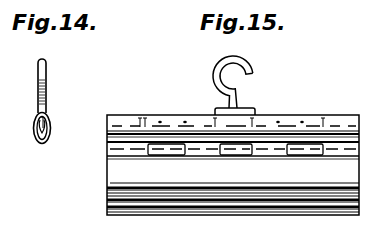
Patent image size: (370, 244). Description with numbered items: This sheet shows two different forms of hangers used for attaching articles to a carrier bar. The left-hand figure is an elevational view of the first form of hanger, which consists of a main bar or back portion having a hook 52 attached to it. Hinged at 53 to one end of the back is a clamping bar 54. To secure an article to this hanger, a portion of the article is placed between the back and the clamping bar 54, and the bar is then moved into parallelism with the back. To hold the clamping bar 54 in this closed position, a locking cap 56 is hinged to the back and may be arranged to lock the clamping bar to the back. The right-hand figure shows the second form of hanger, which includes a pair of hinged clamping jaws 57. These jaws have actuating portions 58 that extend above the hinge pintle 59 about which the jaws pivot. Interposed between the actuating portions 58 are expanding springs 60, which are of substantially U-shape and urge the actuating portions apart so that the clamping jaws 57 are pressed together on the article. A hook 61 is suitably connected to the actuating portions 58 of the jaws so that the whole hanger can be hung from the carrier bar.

In FIG. 14, the hook 52 is at (47, 76).
In FIG. 14, the hinge 53 is at (37, 119).
In FIG. 14, the clamping bar 54 is at (39, 143).
In FIG. 14, the locking cap 56 is at (51, 124).
In FIG. 15, the hinged clamping jaws 57 is at (314, 187).
In FIG. 15, the actuating portions 58 is at (287, 115).
In FIG. 15, the hinge pintle 59 is at (107, 150).
In FIG. 15, the expanding springs 60 is at (138, 115).
In FIG. 15, the hook 61 is at (215, 77).